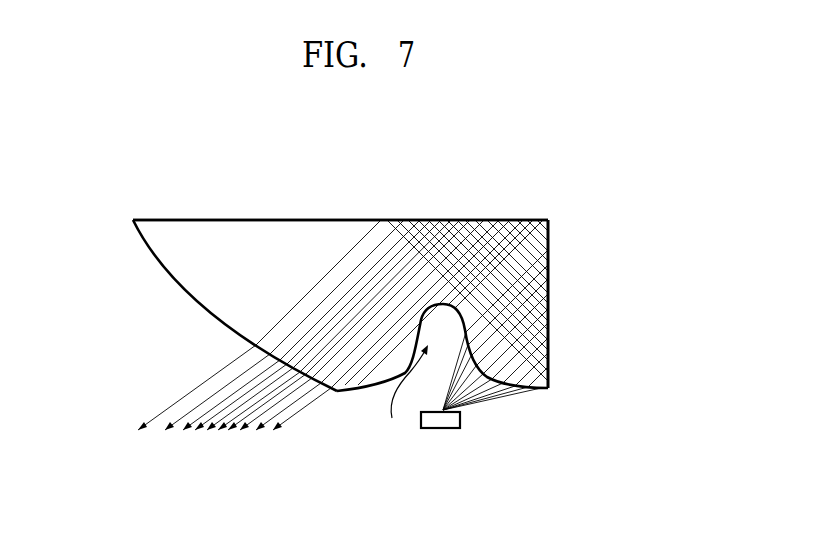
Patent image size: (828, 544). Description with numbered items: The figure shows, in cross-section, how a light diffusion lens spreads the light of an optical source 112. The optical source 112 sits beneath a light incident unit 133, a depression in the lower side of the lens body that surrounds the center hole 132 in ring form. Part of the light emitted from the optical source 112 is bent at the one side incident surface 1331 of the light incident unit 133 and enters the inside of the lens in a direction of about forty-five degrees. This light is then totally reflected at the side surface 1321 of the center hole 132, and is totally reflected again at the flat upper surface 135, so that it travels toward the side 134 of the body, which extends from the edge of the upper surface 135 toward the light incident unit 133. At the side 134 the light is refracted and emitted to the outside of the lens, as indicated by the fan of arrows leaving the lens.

The optical source 112 is at (440, 430).
The center hole 132 is at (371, 319).
The light incident unit 133 is at (400, 394).
The side 134 is at (197, 293).
The upper surface 135 is at (328, 219).
The side surface 1321 is at (549, 245).
The one side incident surface 1331 is at (527, 390).